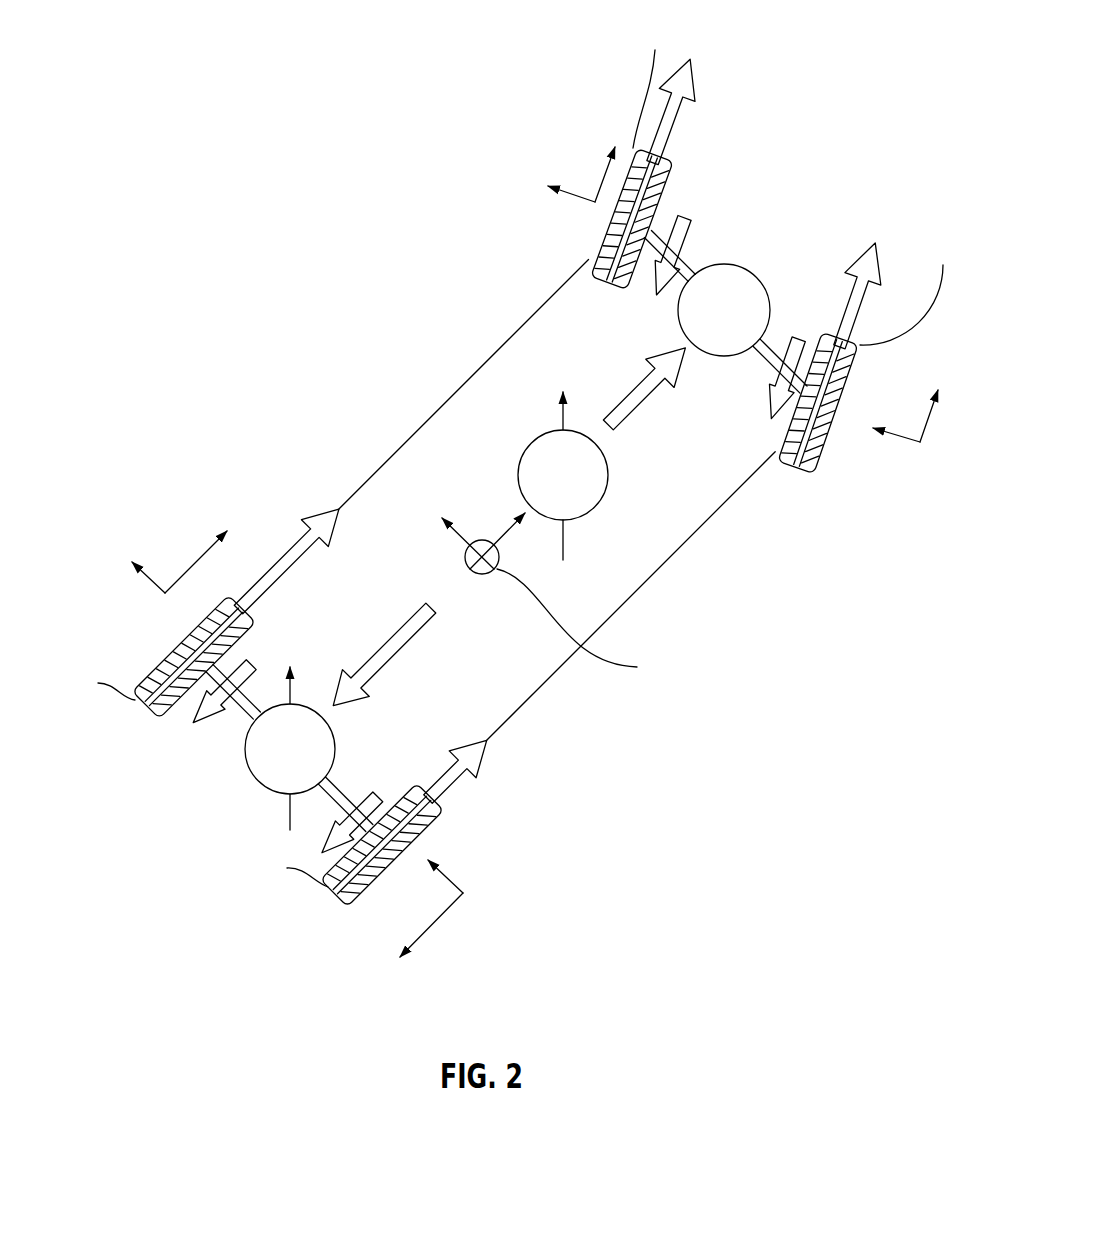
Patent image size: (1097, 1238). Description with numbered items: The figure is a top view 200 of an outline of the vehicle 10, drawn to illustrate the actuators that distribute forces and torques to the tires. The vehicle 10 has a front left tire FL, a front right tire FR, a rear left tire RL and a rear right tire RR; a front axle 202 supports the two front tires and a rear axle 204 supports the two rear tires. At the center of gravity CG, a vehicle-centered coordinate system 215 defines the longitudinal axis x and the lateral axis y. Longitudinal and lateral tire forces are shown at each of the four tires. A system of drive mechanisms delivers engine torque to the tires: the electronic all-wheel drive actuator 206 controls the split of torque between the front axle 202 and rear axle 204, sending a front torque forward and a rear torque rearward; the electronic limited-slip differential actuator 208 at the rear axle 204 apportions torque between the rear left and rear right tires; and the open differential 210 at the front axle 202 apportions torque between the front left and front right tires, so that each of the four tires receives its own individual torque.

The vehicle 10 is at (323, 239).
The top view 200 is at (870, 51).
The front axle 202 is at (690, 252).
The rear axle 204 is at (240, 722).
The electronic All-Wheel Drive actuator (eAWD) 206 is at (608, 474).
The electronic limited-slip differential actuator (eLSD) 208 is at (251, 765).
The open differential (OD) 210 is at (757, 276).
The vehicle-centered coordinate system 215 is at (480, 509).